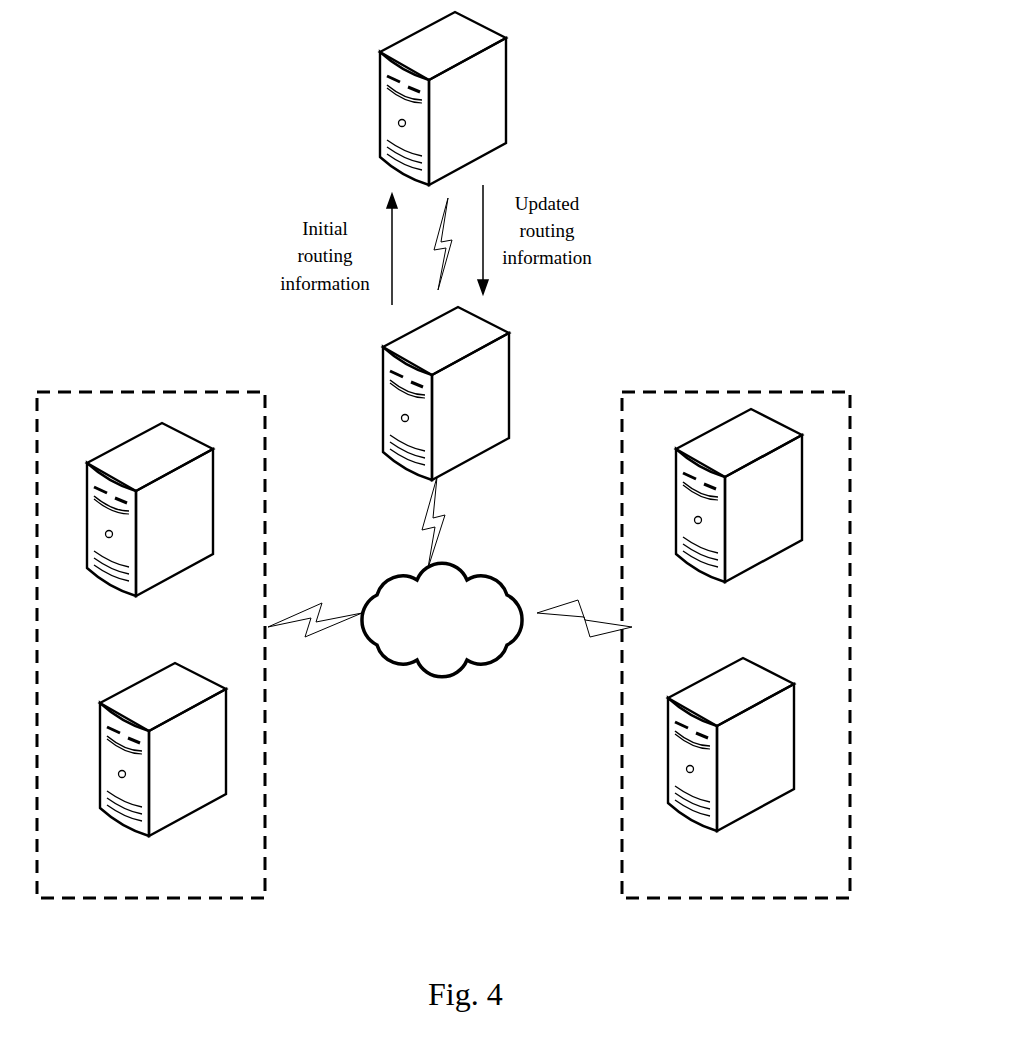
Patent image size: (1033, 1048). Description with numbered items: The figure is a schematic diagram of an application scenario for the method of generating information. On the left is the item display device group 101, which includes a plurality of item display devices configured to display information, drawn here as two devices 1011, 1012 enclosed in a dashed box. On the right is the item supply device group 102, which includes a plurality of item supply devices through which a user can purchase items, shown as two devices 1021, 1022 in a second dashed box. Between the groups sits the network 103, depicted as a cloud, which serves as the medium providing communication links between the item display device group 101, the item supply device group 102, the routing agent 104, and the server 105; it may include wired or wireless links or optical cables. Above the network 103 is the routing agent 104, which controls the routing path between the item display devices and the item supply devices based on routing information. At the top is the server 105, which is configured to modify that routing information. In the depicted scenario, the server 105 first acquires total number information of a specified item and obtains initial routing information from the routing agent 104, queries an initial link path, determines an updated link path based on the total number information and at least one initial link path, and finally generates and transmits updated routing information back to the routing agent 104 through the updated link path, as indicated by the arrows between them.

The item display device group 101 is at (187, 388).
The first network device 1011 is at (217, 517).
The second network device 1012 is at (228, 788).
The item supply device group 102 is at (723, 388).
The third network device 1021 is at (800, 500).
The fourth network device 1022 is at (795, 744).
The network 103 is at (412, 670).
The routing agent 104 is at (500, 342).
The server 105 is at (480, 92).